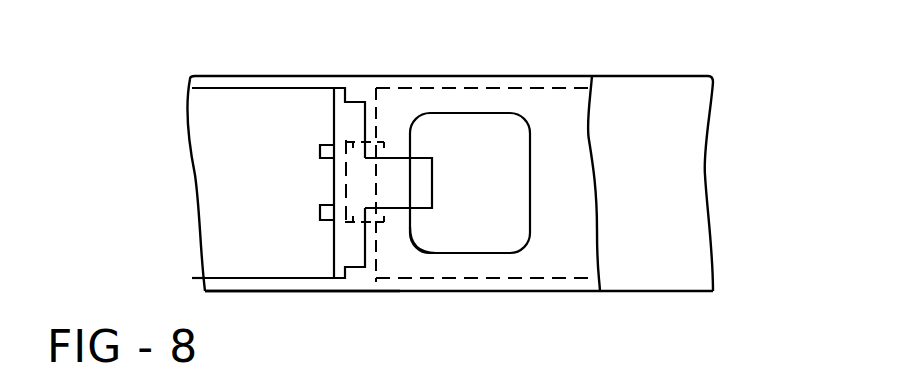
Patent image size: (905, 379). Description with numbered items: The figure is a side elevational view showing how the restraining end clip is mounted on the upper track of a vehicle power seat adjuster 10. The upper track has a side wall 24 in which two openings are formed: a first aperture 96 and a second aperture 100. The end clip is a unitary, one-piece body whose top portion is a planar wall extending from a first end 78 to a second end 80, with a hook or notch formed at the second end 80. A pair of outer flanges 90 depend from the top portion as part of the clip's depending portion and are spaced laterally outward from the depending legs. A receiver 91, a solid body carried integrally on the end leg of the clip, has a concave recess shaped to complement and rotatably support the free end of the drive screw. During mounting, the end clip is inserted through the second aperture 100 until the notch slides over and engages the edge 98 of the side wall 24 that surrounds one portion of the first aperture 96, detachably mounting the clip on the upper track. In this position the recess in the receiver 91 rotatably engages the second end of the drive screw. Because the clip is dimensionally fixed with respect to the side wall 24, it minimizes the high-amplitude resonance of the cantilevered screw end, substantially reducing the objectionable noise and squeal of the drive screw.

The connector assembly 10 is at (390, 122).
The side wall 24 is at (667, 47).
The first end 78 is at (333, 188).
The second end 80 is at (432, 190).
The outer flanges 90 is at (355, 92).
The receiver means 91 is at (383, 223).
The first aperture 96 is at (507, 188).
The edge 98 is at (410, 228).
The second aperture 100 is at (222, 276).